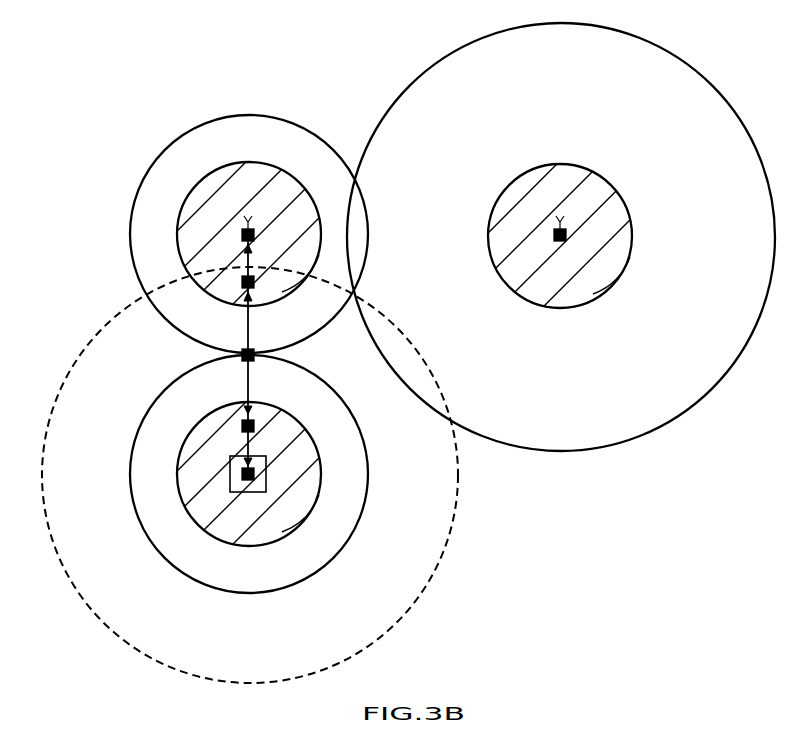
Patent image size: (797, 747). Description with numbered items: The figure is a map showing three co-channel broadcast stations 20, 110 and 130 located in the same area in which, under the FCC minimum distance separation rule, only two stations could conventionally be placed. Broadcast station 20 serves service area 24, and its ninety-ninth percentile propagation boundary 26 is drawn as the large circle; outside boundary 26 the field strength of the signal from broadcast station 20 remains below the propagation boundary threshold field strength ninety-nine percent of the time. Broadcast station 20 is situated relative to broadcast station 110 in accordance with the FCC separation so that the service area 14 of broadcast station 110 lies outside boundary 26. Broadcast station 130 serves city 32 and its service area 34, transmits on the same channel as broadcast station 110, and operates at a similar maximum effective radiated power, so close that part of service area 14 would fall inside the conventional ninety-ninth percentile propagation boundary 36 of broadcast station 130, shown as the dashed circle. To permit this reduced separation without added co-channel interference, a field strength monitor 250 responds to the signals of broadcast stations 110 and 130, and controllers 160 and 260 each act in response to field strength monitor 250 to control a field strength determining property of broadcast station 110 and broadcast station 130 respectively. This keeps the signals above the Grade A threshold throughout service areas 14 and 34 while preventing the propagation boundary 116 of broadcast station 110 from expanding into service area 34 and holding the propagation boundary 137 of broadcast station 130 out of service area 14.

The broadcast station 20 is at (567, 225).
The service area 24 is at (512, 185).
The 99th percentile propagation boundary 26 is at (444, 55).
The service area 14 is at (200, 182).
The broadcast station 110 is at (253, 227).
The propagation boundary 116 is at (196, 123).
The controller 160 is at (257, 283).
The field strength monitor 250 is at (245, 361).
The controller 260 is at (255, 428).
The broadcast station 130 is at (258, 467).
The city 32 is at (230, 492).
The service area 34 is at (202, 419).
The propagation boundary 137 is at (130, 479).
The conventional 99th percentile propagation boundary 36 is at (455, 498).